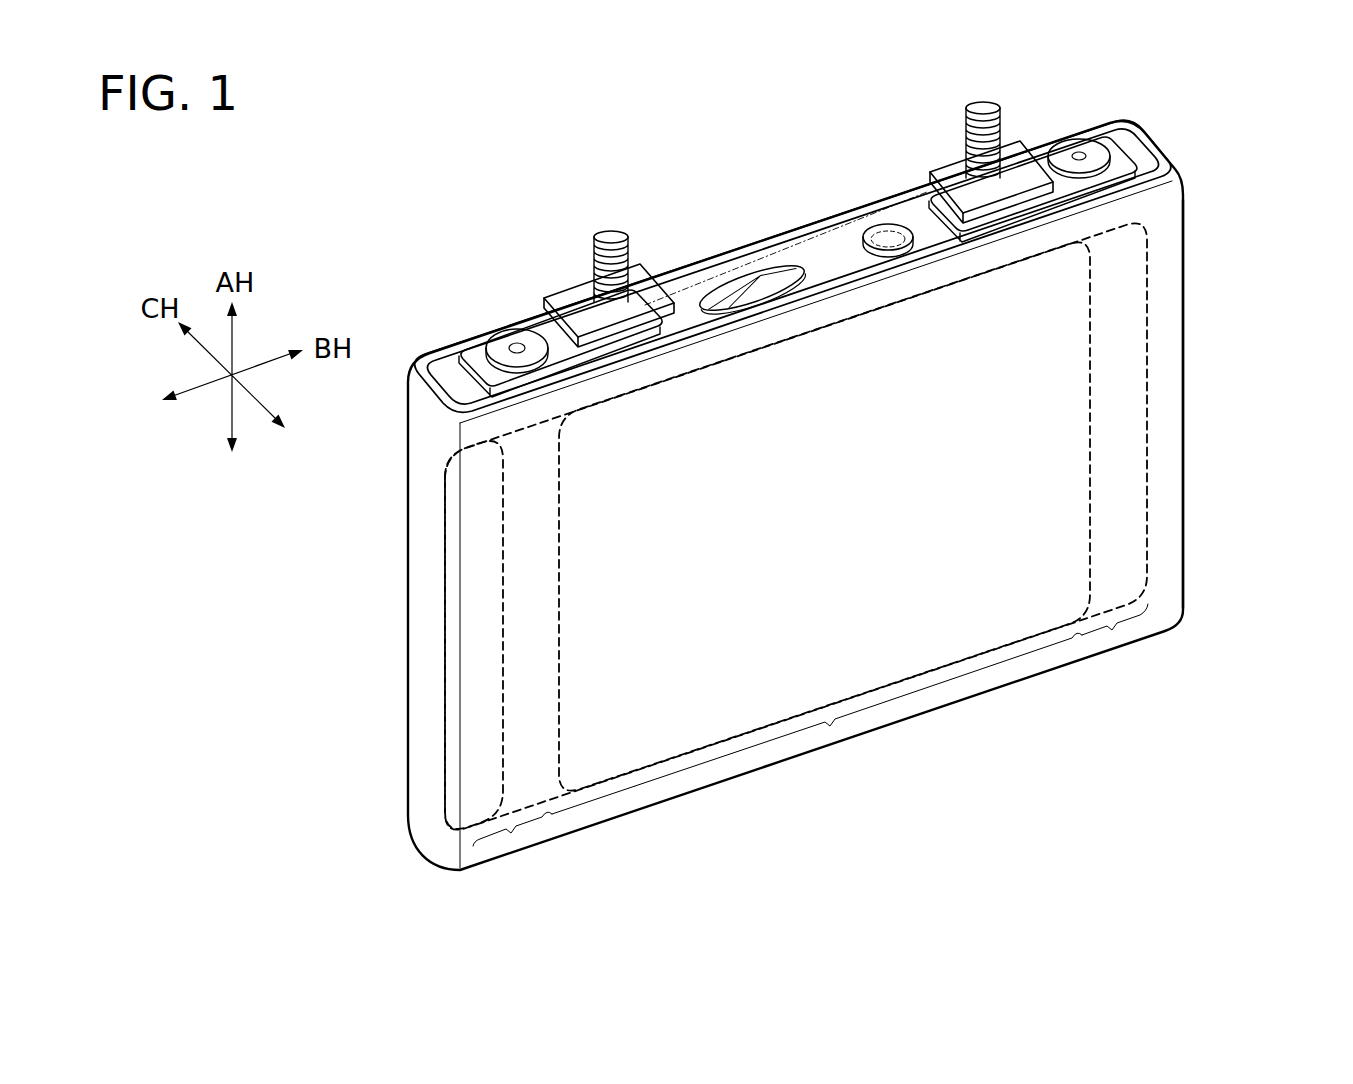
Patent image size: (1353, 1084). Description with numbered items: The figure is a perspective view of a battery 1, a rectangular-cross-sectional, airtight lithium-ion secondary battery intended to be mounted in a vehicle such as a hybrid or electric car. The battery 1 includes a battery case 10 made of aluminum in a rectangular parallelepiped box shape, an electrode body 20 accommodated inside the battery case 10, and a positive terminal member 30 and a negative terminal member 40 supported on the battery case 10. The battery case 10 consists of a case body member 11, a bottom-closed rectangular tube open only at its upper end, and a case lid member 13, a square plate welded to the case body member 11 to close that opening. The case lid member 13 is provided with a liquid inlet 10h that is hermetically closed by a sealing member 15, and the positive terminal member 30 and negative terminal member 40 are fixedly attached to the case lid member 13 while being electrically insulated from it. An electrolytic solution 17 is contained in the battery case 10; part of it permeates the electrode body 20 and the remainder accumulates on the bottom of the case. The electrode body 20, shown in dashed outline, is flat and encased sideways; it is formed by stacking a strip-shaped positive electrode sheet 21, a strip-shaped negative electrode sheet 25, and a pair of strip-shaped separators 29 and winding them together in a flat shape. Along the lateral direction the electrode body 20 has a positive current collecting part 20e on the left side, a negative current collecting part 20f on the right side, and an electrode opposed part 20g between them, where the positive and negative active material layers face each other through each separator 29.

The battery 1 is at (668, 210).
The battery case 10 is at (1170, 412).
The case body member 11 is at (1170, 516).
The case lid member 13 is at (822, 258).
The sealing member 15 is at (878, 232).
The liquid inlet 10h is at (888, 240).
The electrolytic solution 17 is at (697, 724).
The electrode body 20 is at (796, 526).
The positive electrode sheet 21 is at (824, 516).
The negative electrode sheet 25 is at (474, 635).
The separators 29 is at (796, 526).
The positive current collecting part 20e is at (513, 838).
The negative current collecting part 20f is at (1123, 636).
The electrode opposed part 20g is at (840, 723).
The positive terminal member 30 is at (570, 300).
The negative terminal member 40 is at (950, 172).